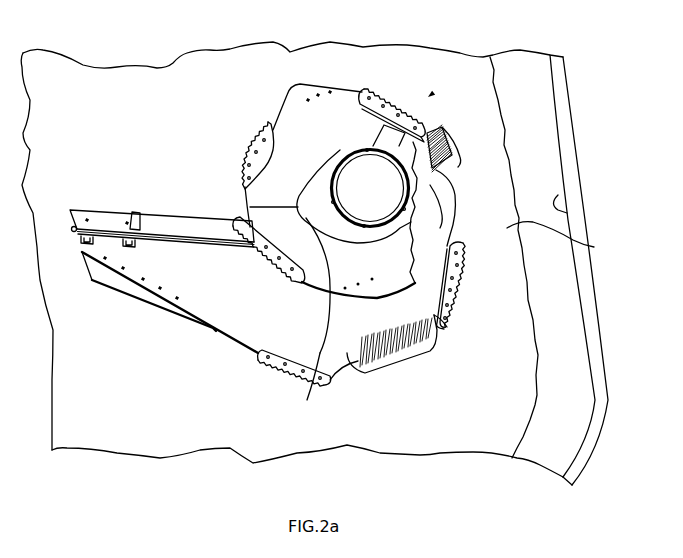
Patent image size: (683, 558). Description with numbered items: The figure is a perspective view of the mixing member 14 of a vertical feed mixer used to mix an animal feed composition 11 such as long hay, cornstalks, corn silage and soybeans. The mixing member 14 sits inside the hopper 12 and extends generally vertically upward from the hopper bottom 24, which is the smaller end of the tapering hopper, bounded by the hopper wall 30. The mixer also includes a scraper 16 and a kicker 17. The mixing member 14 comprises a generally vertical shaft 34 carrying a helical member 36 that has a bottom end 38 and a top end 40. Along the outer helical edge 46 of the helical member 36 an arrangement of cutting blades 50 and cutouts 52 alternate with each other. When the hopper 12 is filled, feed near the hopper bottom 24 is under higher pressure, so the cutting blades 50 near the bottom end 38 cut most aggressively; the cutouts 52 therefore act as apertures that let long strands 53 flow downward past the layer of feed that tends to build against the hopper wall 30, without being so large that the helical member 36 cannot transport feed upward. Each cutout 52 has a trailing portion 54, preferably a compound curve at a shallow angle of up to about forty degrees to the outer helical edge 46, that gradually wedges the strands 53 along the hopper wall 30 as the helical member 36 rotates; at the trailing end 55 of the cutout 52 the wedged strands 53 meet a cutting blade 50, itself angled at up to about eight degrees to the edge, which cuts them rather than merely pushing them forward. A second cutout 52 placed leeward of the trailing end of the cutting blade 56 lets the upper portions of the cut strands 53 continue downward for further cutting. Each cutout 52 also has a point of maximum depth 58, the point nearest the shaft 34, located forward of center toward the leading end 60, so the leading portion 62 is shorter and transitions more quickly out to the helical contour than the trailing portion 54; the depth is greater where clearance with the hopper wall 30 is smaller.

The animal feed composition 11 is at (594, 247).
The hopper 12 is at (565, 102).
The mixing member 14 is at (430, 96).
The scraper 16 is at (142, 218).
The kicker 17 is at (98, 272).
The hopper bottom 24 is at (387, 448).
The hopper wall 30 is at (567, 213).
The shaft 34 is at (306, 387).
The helical member 36 is at (197, 296).
The bottom end 38 is at (167, 242).
The top end 40 is at (410, 108).
The outer helical edge 46 is at (235, 343).
The cutting blade 50 is at (402, 98).
The cutout 52 is at (283, 96).
The long strands 53 is at (448, 145).
The trailing portion 54 is at (440, 170).
The trailing end 55 is at (432, 118).
The trailing end of cutting blade 56 is at (463, 242).
The point of maximum depth 58 is at (440, 217).
The leading end 60 is at (447, 245).
The leading portion 62 is at (440, 227).